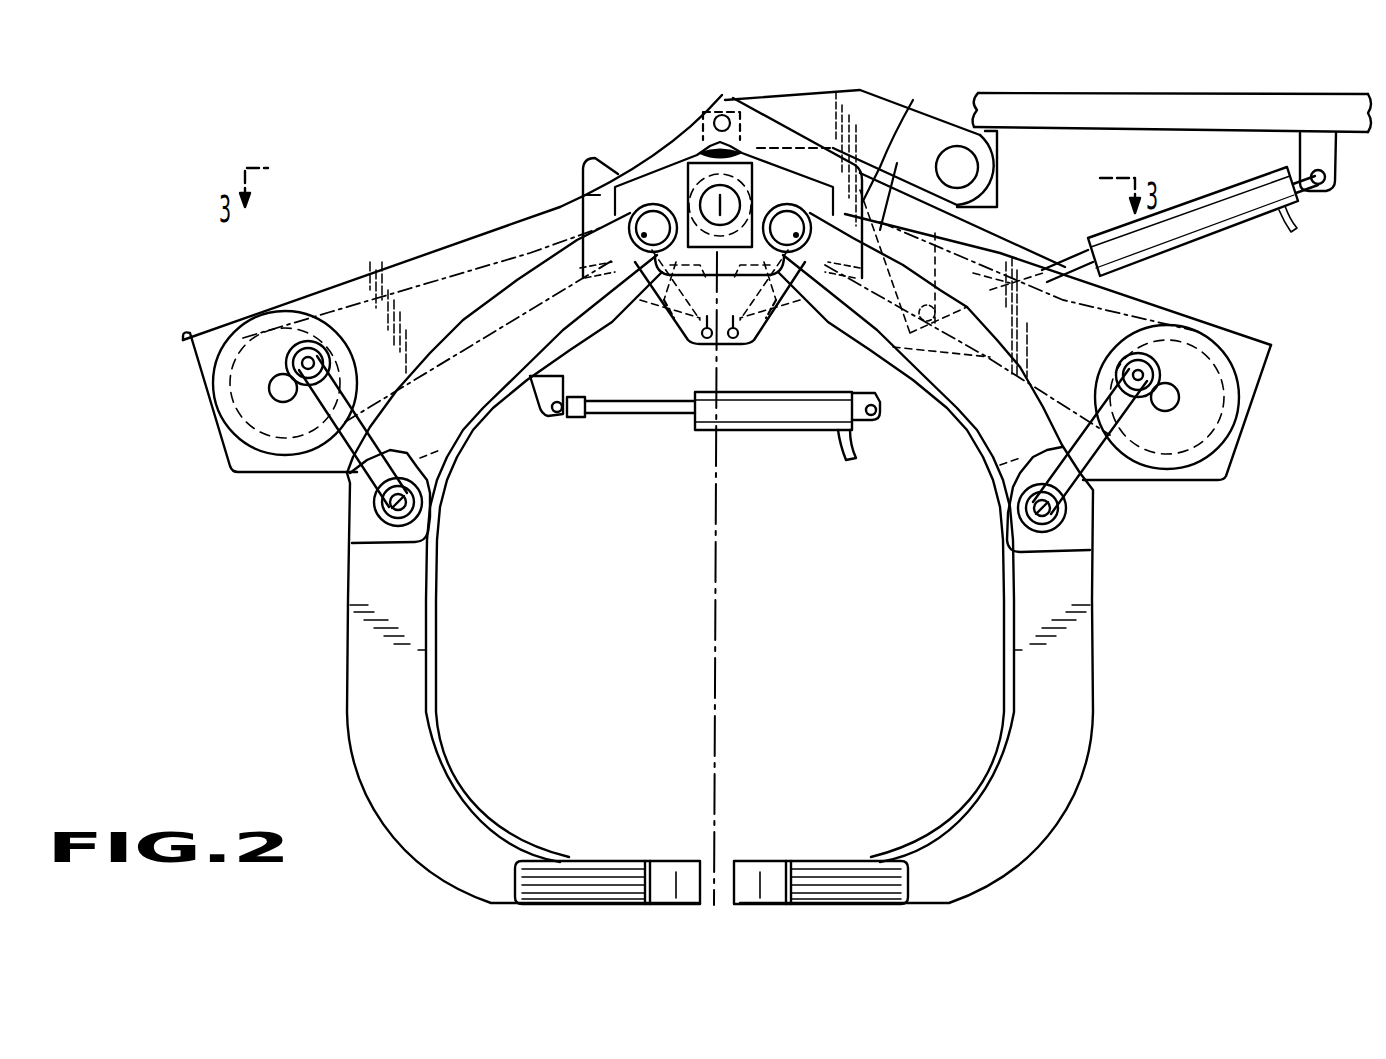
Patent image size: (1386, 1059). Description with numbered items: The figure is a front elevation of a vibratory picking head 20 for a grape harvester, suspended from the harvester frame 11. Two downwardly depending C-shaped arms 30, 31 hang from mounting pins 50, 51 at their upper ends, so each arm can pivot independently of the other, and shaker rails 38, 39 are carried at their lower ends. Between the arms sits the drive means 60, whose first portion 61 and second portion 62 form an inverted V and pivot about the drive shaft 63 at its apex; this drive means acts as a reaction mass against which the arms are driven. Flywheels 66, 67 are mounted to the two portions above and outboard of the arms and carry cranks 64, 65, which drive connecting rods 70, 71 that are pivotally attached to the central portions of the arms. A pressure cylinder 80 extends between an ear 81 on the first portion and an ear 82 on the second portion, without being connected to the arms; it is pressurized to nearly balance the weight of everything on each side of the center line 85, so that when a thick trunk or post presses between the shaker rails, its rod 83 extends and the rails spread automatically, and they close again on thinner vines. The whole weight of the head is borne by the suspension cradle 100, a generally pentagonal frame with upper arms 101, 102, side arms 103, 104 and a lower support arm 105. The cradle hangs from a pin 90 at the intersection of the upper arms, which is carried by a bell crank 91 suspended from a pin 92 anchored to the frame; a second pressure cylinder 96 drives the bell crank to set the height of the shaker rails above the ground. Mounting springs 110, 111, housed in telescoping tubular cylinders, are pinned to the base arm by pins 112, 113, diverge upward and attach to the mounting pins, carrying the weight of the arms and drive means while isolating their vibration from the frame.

The harvester frame 11 is at (1263, 96).
The vibratory picking head 20 is at (443, 238).
The C-shaped arm 30 is at (437, 661).
The C-shaped arm 31 is at (1000, 672).
The shaker rail 38 is at (695, 860).
The shaker rail 39 is at (744, 860).
The mounting pin 50 is at (612, 270).
The mounting pin 51 is at (814, 270).
The drive means 60 is at (418, 250).
The first portion 61 is at (395, 268).
The second portion 62 is at (1000, 250).
The drive shaft 63 is at (707, 197).
The crank 64 is at (312, 360).
The crank 65 is at (1141, 371).
The flywheel 66 is at (290, 462).
The flywheel 67 is at (1228, 420).
The connecting rod 70 is at (353, 470).
The connecting rod 71 is at (1095, 470).
The pressure cylinder 80 is at (785, 430).
The ear 81 is at (546, 414).
The ear 82 is at (878, 417).
The rod 83 is at (630, 415).
The center line 85 is at (718, 622).
The pin 90 is at (722, 114).
The bell crank 91 is at (860, 92).
The pin 92 is at (968, 167).
The pressure cylinder 96 is at (1250, 186).
The suspension cradle 100 is at (673, 122).
The upper arm 101 is at (657, 138).
The upper arm 102 is at (771, 128).
The side arm 103 is at (582, 193).
The side arm 104 is at (902, 147).
The lower support arm 105 is at (657, 323).
The mounting spring 110 is at (670, 322).
The mounting spring 111 is at (758, 320).
The pin 112 is at (704, 340).
The pin 113 is at (736, 340).